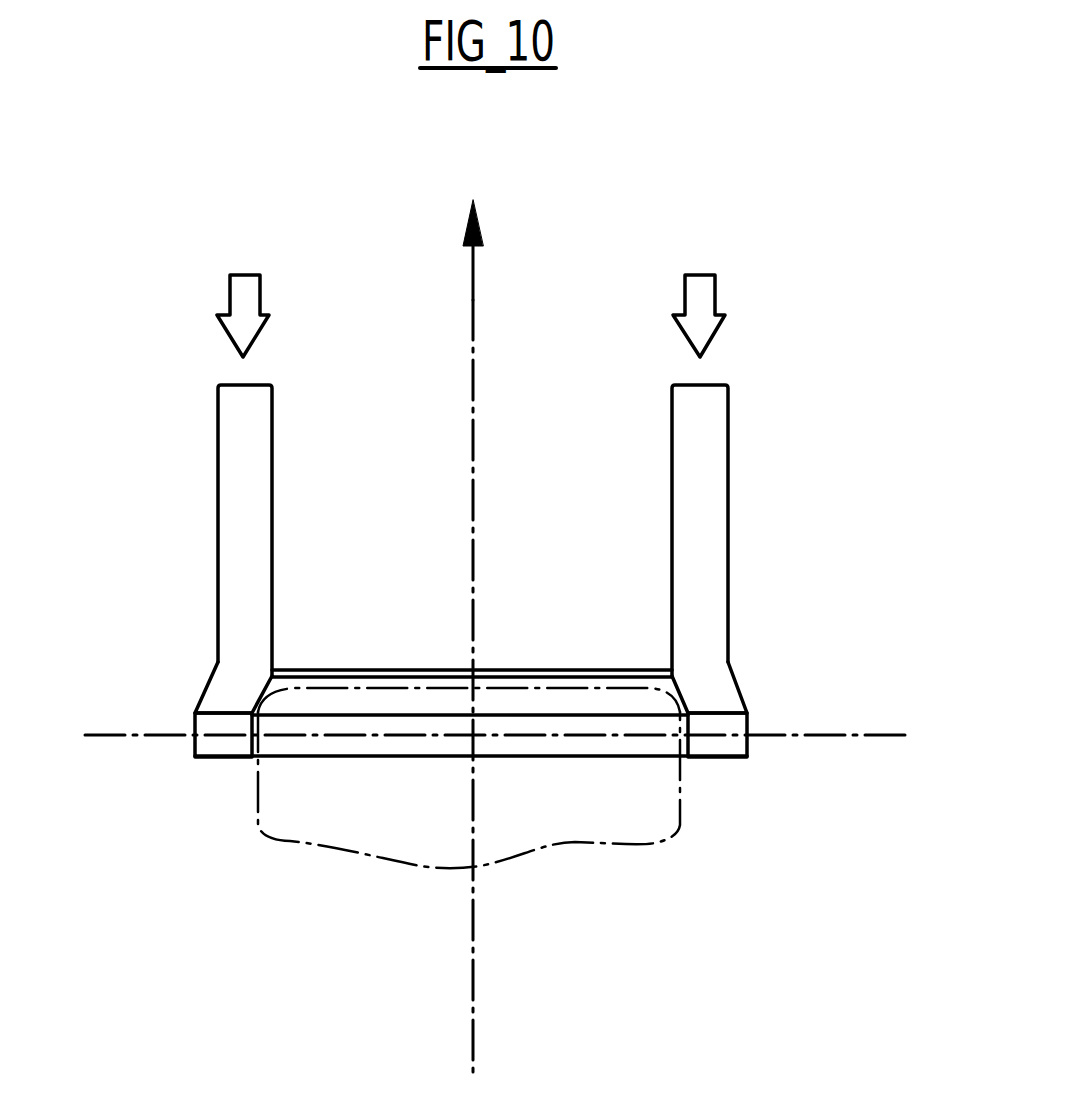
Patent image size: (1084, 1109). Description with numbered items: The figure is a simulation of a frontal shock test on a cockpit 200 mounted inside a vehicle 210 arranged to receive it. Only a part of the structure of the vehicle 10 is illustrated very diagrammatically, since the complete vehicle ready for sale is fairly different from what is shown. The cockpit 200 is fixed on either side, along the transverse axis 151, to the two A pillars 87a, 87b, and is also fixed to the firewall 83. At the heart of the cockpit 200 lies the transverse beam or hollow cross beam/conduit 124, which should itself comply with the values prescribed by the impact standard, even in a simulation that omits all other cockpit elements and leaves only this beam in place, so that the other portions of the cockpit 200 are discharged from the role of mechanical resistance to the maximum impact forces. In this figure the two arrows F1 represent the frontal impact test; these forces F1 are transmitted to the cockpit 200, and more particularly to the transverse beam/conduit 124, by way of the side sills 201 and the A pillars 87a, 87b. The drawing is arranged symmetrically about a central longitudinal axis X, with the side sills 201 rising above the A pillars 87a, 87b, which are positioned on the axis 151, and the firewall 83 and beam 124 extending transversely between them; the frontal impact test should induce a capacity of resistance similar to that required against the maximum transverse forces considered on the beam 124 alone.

The vehicle 10 is at (466, 652).
The side sills 201 is at (255, 515).
The vehicle 210 is at (360, 440).
The firewall 83 is at (621, 668).
The A pillar 87a is at (222, 747).
The A pillar 87b is at (720, 750).
The beam/conduit 124 is at (608, 747).
The cockpit 200 is at (302, 843).
The axis 151 is at (877, 735).
The longitudinal axis X is at (473, 287).
The frontal impact forces F1 is at (471, 273).